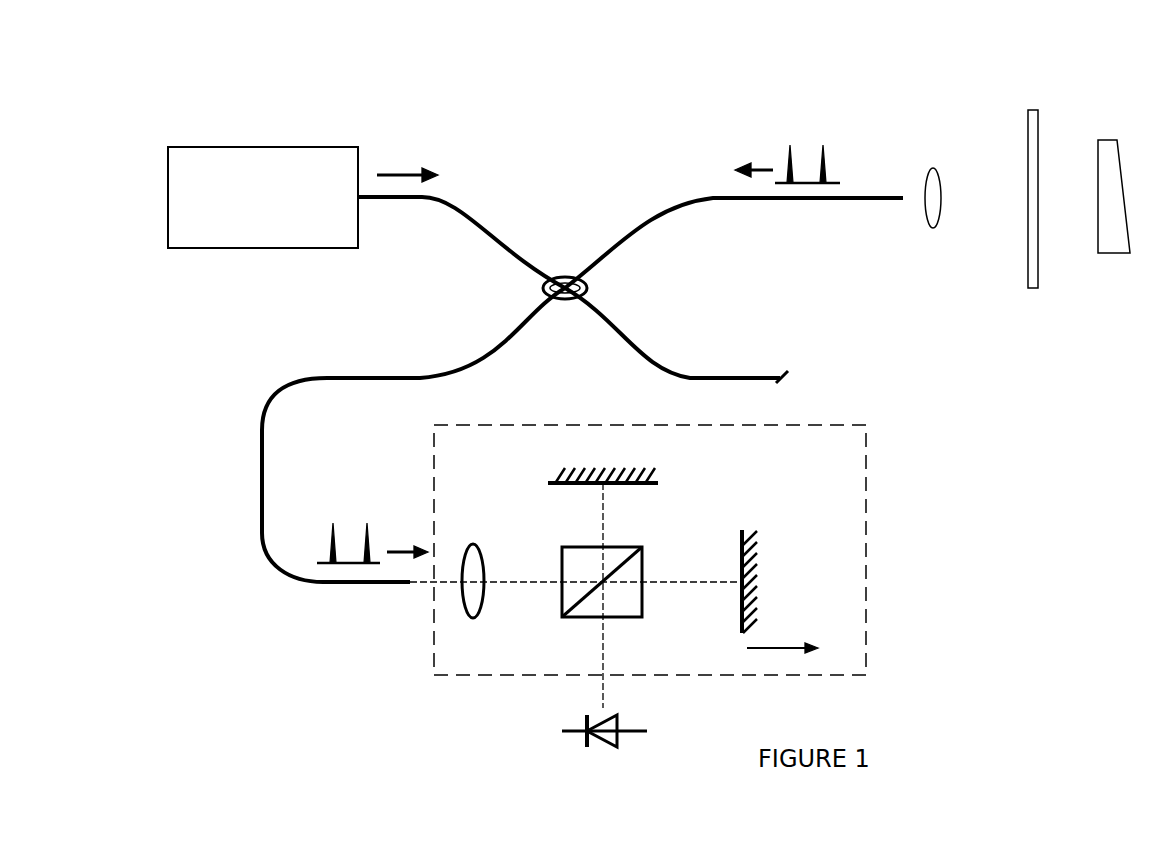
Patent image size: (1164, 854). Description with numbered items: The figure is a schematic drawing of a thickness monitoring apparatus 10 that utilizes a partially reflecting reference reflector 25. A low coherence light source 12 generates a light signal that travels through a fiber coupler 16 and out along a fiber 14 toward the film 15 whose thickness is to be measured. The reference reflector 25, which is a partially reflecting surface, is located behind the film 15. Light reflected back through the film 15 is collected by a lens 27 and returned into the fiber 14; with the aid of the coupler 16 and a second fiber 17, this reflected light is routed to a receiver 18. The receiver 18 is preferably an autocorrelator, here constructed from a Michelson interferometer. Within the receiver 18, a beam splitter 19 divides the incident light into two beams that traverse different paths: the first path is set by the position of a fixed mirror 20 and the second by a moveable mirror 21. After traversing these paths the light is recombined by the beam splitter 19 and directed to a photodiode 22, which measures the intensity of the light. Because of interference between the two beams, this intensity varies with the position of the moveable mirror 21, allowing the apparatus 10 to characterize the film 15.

The thickness monitoring apparatus 10 is at (262, 73).
The low coherence light source 12 is at (332, 247).
The fiber 14 is at (636, 226).
The film 15 is at (1031, 111).
The coupler 16 is at (565, 301).
The fiber 17 is at (370, 379).
The receiver 18 is at (858, 479).
The beam splitter 19 is at (642, 611).
The fixed mirror 20 is at (640, 487).
The moveable mirror 21 is at (742, 537).
The photodiode 22 is at (612, 748).
The reference reflector 25 is at (1112, 138).
The lens 27 is at (927, 177).